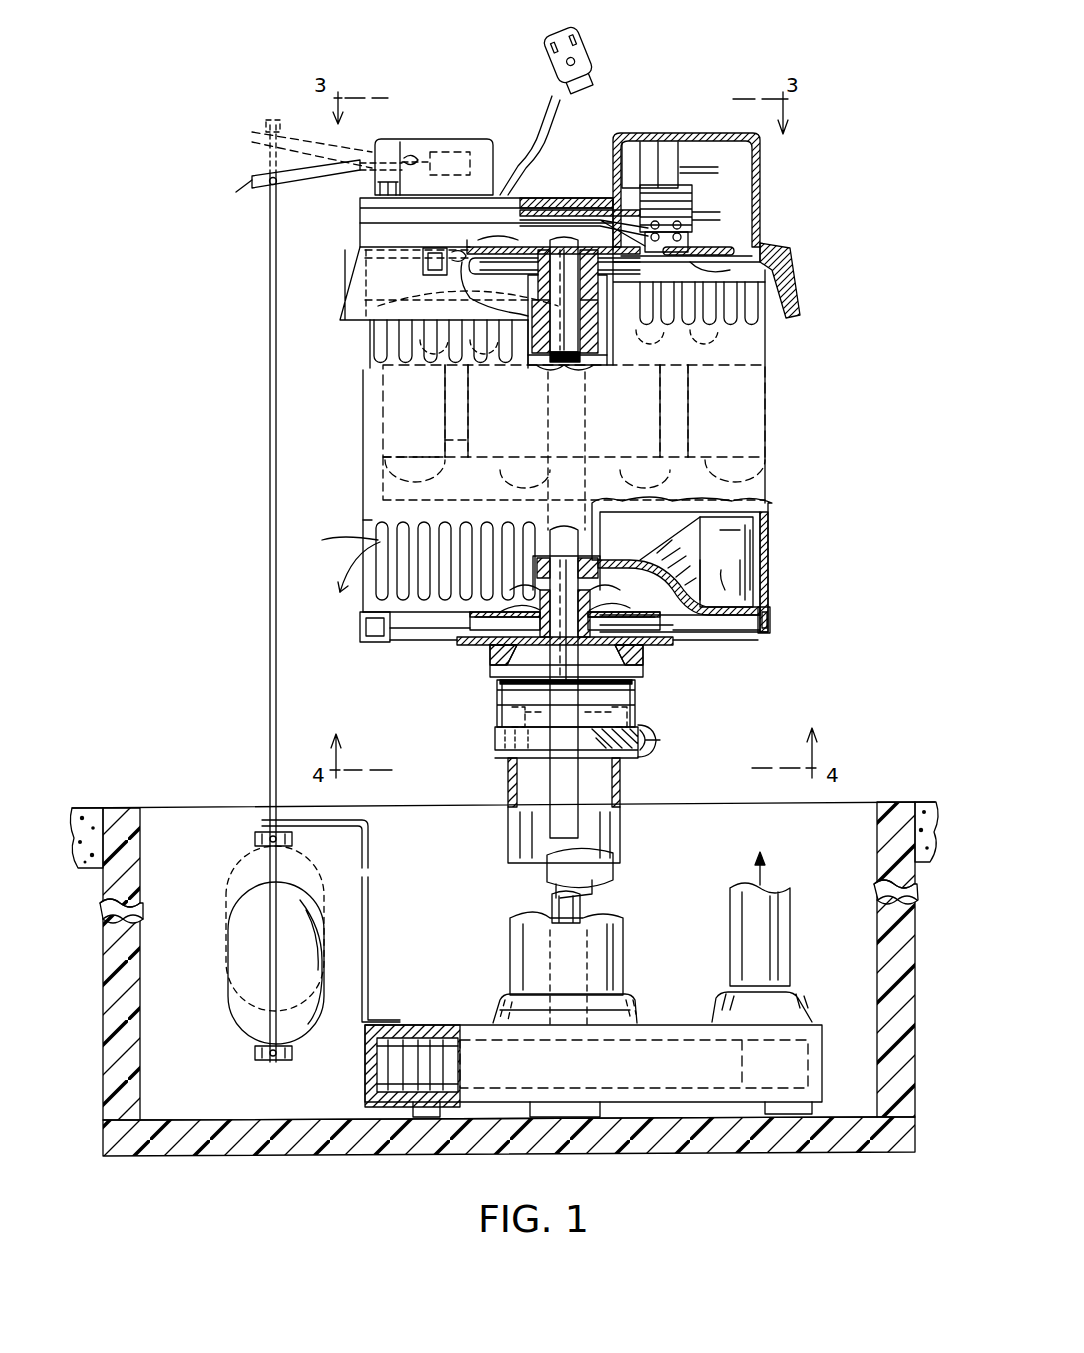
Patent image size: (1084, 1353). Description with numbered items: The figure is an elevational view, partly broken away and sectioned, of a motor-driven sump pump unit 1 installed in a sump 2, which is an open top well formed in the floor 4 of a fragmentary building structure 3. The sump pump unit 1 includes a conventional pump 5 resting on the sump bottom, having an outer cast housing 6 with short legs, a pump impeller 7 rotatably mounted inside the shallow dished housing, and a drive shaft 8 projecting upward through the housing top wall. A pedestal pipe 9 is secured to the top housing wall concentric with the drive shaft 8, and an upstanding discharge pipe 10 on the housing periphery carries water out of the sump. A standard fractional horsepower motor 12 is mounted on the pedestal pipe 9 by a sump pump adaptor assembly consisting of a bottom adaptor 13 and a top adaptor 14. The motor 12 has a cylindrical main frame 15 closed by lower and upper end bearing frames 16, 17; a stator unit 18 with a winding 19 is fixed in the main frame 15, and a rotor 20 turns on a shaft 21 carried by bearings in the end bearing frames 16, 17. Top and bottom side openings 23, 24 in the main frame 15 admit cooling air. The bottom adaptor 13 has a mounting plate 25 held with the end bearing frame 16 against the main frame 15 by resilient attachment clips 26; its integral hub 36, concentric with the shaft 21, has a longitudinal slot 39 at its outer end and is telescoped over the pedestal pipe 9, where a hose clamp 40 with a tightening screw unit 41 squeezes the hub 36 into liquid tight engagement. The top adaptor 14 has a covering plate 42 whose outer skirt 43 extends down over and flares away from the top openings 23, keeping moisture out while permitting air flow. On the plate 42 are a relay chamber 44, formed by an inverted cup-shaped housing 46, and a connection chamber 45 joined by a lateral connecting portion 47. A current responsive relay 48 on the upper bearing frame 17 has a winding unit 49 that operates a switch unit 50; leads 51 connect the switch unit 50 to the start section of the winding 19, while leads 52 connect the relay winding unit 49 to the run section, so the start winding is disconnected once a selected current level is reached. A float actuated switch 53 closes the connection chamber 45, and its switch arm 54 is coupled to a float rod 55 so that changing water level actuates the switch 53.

The sump pump unit 1 is at (805, 639).
The sump 2 is at (664, 848).
The building structure 3 is at (651, 1166).
The floor 4 is at (928, 802).
The pump 5 is at (682, 1014).
The outer cast housing 6 is at (440, 1030).
The pump impeller 7 is at (422, 1050).
The drive shaft 8 is at (586, 908).
The pedestal pipe 9 is at (618, 944).
The discharge pipe 10 is at (774, 948).
The motor 12 is at (750, 404).
The bottom adaptor 13 is at (662, 650).
The top adaptor 14 is at (775, 249).
The main frame 15 is at (770, 526).
The end bearing frame 16 is at (702, 590).
The end bearing frame 17 is at (708, 266).
The stator unit 18 is at (750, 378).
The winding 19 is at (752, 474).
The rotor 20 is at (470, 414).
The shaft 21 is at (564, 538).
The top side openings 23 is at (412, 358).
The bottom side openings 24 is at (418, 566).
The mounting plate 25 is at (730, 644).
The attachment clip 26 is at (420, 269).
The hub 36 is at (630, 708).
The slot 39 is at (560, 688).
The hose clamp 40 is at (478, 752).
The tightening screw unit 41 is at (666, 762).
The covering plate 42 is at (365, 236).
The skirt 43 is at (339, 298).
The relay chamber 44 is at (742, 185).
The connection chamber 45 is at (362, 215).
The inverted cup-shaped housing 46 is at (702, 133).
The lateral connecting portion 47 is at (550, 208).
The current responsive relay 48 is at (659, 176).
The winding unit 49 is at (630, 190).
The switch unit 50 is at (682, 230).
The leads 51 is at (582, 214).
The leads 52 is at (594, 200).
The float actuated switch 53 is at (476, 140).
The switch arm 54 is at (250, 182).
The float rod 55 is at (268, 488).